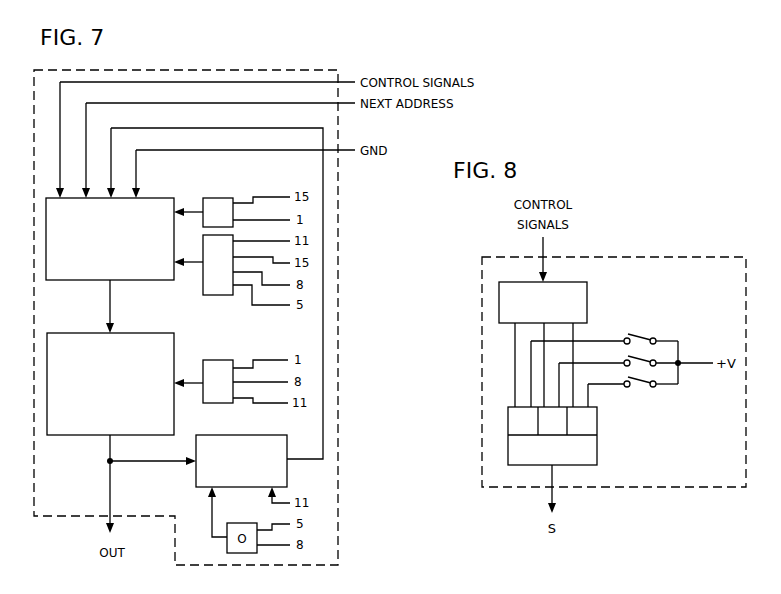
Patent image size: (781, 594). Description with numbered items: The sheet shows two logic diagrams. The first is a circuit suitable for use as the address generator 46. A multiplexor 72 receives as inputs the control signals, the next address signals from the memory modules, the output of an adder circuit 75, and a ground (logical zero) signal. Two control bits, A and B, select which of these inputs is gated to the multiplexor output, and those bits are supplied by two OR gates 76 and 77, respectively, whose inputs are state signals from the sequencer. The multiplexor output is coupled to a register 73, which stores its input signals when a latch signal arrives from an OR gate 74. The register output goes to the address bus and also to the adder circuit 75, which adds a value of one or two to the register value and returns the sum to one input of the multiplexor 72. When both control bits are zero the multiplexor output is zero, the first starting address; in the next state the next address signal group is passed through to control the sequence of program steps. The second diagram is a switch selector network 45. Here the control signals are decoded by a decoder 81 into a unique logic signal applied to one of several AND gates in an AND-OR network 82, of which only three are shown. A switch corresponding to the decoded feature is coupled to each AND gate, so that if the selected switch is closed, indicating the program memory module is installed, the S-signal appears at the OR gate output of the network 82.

In FIG. 7, the address generator 46 is at (340, 259).
In FIG. 7, the multiplexor 72 is at (159, 198).
In FIG. 7, the register 73 is at (164, 333).
In FIG. 7, the OR gate 74 is at (216, 360).
In FIG. 7, the ADDER circuit 75 is at (220, 435).
In FIG. 7, the OR gate 76 is at (219, 198).
In FIG. 7, the OR gate 77 is at (202, 281).
In FIG. 8, the switch selector network 45 is at (652, 257).
In FIG. 8, the decoder 81 is at (589, 293).
In FIG. 8, the AND-OR network 82 is at (598, 431).